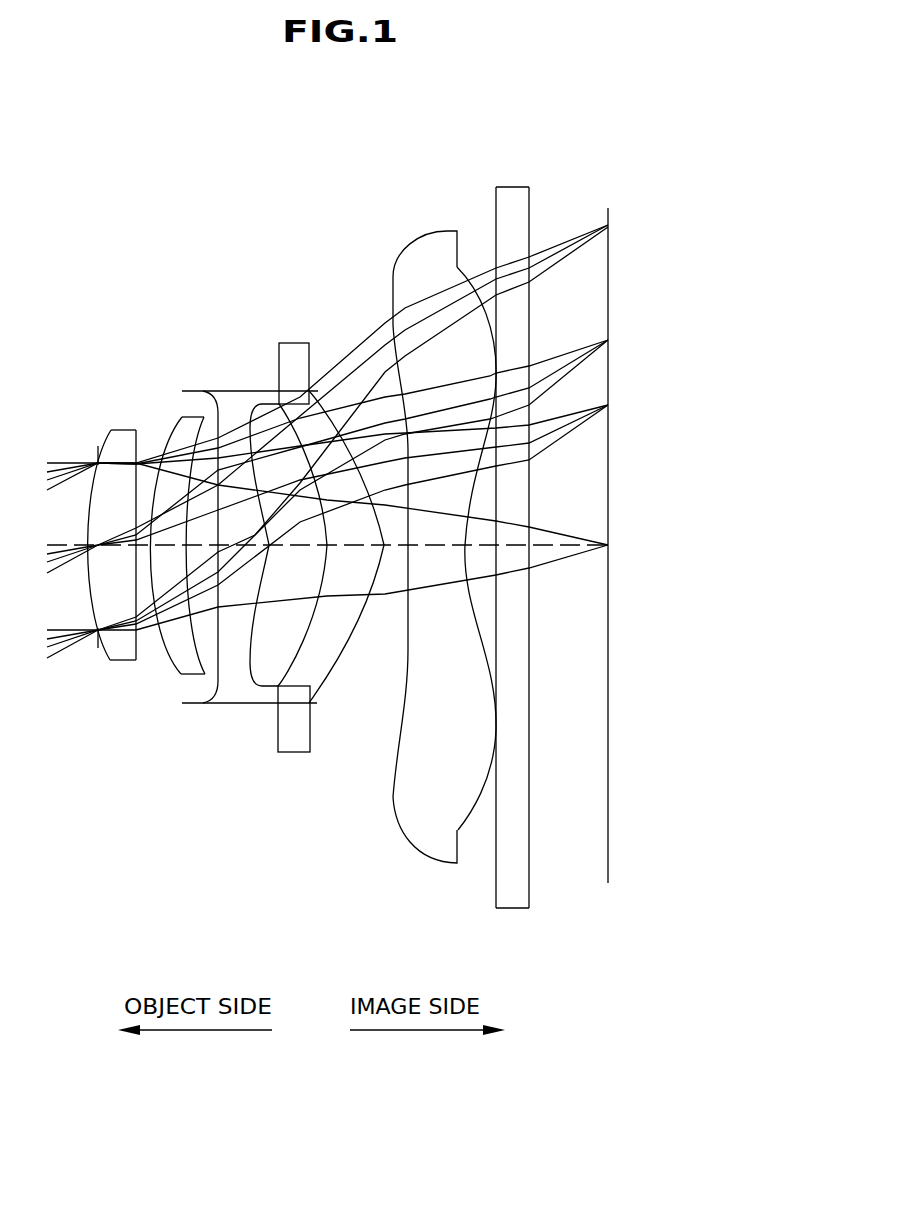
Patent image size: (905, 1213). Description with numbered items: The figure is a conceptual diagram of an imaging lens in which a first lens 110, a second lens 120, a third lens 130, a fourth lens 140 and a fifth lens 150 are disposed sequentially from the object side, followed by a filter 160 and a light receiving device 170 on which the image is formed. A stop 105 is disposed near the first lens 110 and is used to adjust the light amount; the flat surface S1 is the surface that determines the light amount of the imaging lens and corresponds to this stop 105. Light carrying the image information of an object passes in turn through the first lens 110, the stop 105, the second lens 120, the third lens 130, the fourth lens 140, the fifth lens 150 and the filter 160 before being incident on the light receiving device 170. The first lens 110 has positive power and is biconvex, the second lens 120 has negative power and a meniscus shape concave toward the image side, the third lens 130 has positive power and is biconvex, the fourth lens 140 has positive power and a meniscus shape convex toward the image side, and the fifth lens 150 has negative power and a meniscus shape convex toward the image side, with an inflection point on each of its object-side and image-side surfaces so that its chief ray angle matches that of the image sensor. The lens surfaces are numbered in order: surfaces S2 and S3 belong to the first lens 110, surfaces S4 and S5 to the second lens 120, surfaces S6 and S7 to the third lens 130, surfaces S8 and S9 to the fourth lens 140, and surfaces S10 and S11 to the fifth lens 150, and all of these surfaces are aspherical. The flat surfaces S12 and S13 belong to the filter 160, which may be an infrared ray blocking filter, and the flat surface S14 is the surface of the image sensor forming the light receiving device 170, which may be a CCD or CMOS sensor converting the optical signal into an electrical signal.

The stop 105 is at (98, 458).
The first lens 110 is at (102, 541).
The second lens 120 is at (164, 540).
The third lens 130 is at (247, 538).
The fourth lens 140 is at (318, 536).
The fifth lens 150 is at (429, 544).
The filter 160 is at (514, 539).
The light receiving device 170 is at (603, 539).
The stop surface S1 is at (90, 647).
The lens surface of first lens S2 is at (100, 666).
The lens surface of first lens S3 is at (138, 650).
The lens surface of second lens S4 is at (158, 660).
The lens surface of second lens S5 is at (187, 703).
The lens surface of third lens S6 is at (218, 703).
The lens surface of third lens S7 is at (259, 679).
The lens surface of fourth lens S8 is at (278, 735).
The lens surface of fourth lens S9 is at (310, 733).
The lens surface of fifth lens S10 is at (391, 793).
The lens surface of fifth lens S11 is at (465, 860).
The filter surface S12 is at (496, 893).
The filter surface S13 is at (529, 880).
The image sensor surface S14 is at (608, 870).